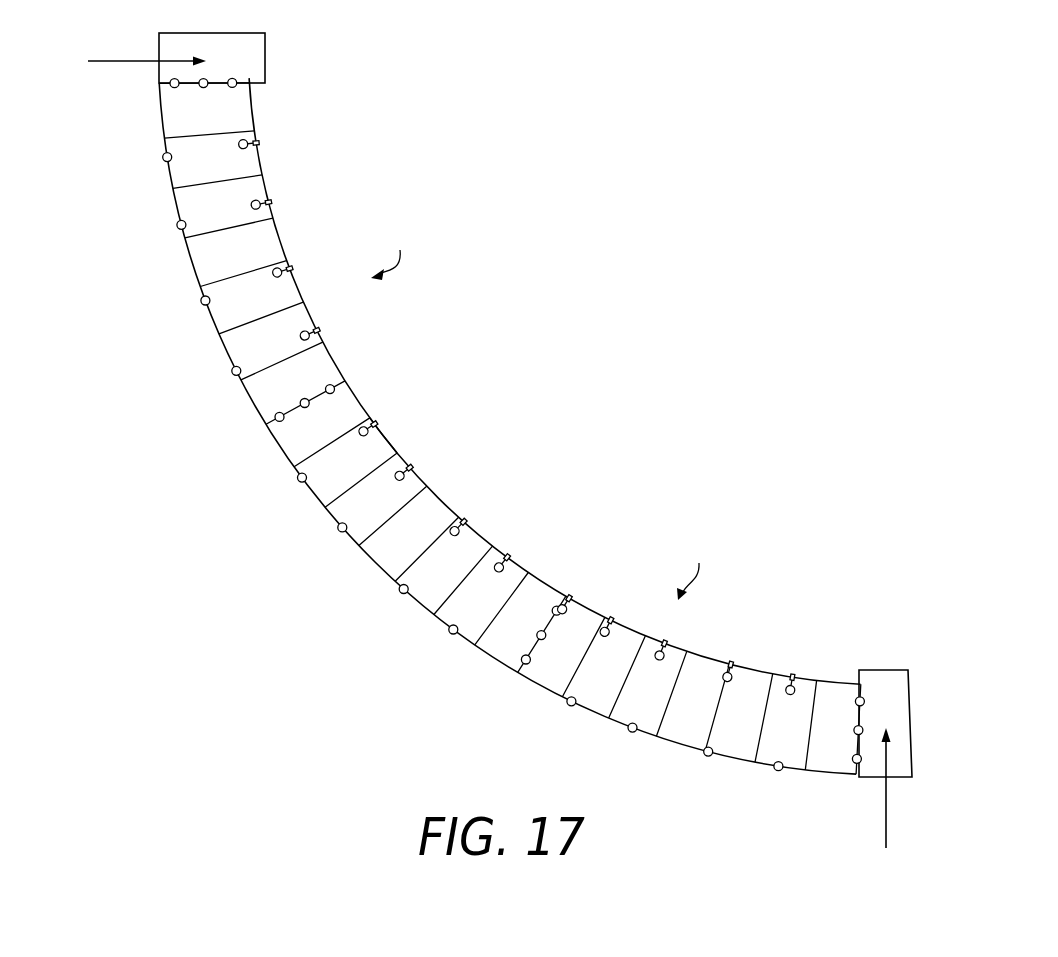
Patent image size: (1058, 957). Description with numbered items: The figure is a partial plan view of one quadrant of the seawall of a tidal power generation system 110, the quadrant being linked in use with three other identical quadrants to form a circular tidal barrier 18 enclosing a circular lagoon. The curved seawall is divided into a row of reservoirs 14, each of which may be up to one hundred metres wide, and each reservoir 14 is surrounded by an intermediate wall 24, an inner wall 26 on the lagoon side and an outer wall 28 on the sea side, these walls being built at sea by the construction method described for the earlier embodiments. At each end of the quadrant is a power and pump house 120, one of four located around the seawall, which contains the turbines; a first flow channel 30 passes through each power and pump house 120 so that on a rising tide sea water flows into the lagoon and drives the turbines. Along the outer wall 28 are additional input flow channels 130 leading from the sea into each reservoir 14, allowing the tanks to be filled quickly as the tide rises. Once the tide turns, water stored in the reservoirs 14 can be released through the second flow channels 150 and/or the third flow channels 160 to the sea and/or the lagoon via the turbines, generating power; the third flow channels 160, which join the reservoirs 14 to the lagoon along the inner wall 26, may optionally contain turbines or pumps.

The reservoir 14 is at (592, 699).
The tidal barrier 18 is at (697, 571).
The intermediate wall 24 is at (257, 217).
The inner wall 26 is at (383, 433).
The outer wall 28 is at (219, 348).
The first flow channel 30 is at (113, 60).
The tidal power generation system 110 is at (404, 255).
The power and pump house 120 is at (266, 50).
The additional input flow channel 130 is at (398, 592).
The second flow channel 150 is at (203, 89).
The third flow channel 160 is at (408, 467).